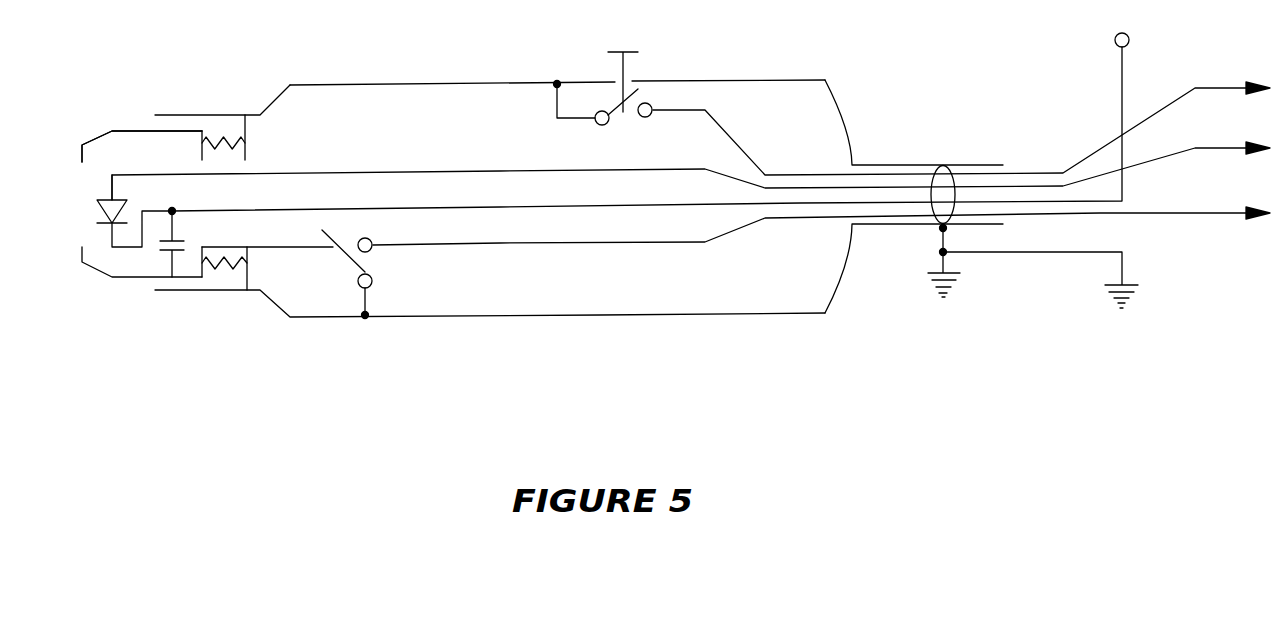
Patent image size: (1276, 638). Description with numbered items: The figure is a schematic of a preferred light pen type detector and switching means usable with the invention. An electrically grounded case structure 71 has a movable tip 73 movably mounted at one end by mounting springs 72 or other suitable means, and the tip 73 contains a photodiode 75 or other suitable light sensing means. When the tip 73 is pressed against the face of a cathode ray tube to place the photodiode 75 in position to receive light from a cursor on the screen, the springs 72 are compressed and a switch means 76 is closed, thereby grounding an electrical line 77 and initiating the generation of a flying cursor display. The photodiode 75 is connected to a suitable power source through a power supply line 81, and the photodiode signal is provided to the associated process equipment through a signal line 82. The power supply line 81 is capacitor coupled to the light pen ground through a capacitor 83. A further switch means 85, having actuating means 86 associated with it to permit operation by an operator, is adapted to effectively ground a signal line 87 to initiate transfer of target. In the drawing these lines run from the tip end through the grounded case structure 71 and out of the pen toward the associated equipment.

The case structure 71 is at (427, 83).
The mounting springs 72 is at (223, 130).
The movable tip 73 is at (128, 130).
The photodiode 75 is at (97, 203).
The switch means 76 is at (368, 272).
The electrical line 77 is at (544, 243).
The power supply line 81 is at (412, 210).
The signal line 82 is at (418, 172).
The capacitor 83 is at (175, 227).
The switch means 85 is at (615, 118).
The actuating means 86 is at (625, 67).
The signal line 87 is at (730, 132).